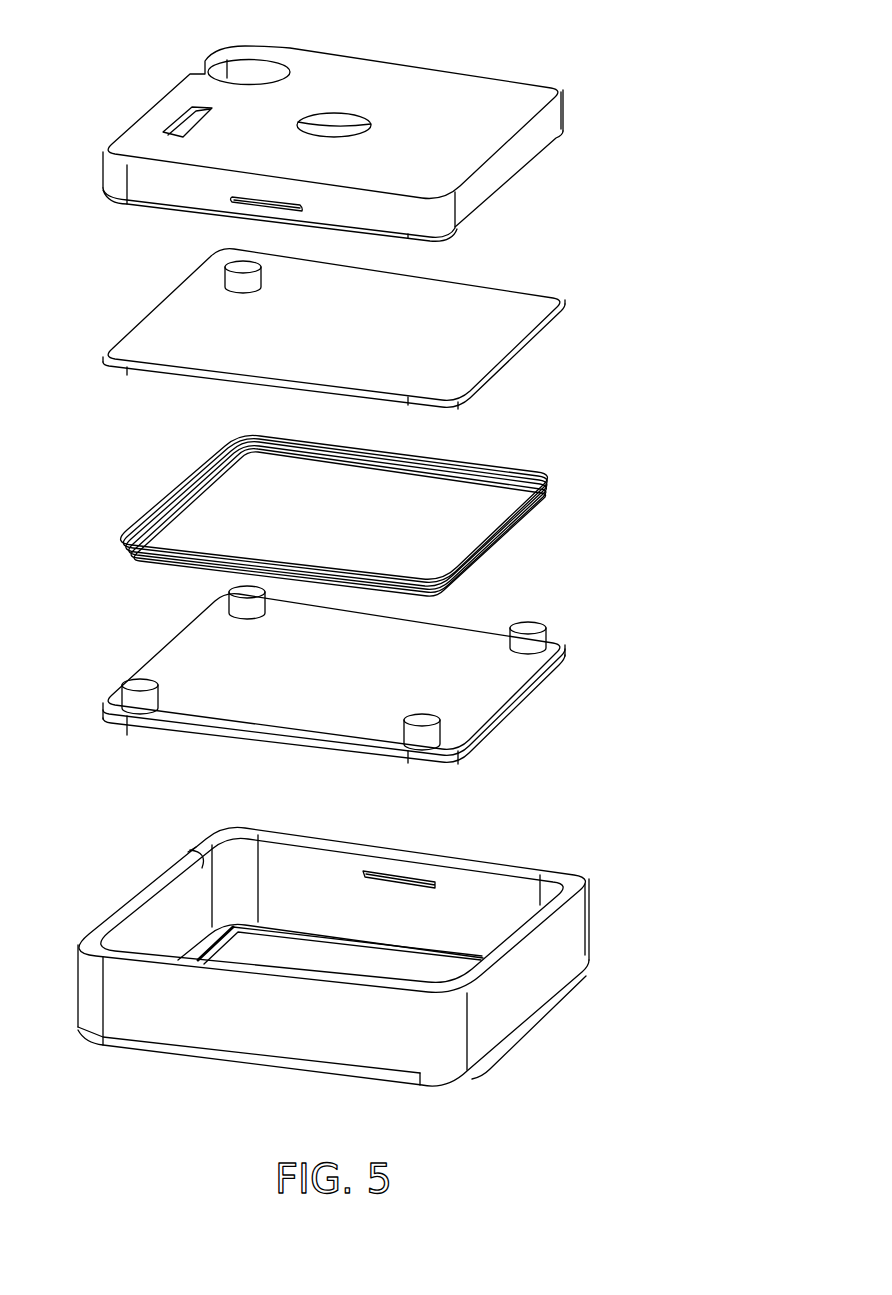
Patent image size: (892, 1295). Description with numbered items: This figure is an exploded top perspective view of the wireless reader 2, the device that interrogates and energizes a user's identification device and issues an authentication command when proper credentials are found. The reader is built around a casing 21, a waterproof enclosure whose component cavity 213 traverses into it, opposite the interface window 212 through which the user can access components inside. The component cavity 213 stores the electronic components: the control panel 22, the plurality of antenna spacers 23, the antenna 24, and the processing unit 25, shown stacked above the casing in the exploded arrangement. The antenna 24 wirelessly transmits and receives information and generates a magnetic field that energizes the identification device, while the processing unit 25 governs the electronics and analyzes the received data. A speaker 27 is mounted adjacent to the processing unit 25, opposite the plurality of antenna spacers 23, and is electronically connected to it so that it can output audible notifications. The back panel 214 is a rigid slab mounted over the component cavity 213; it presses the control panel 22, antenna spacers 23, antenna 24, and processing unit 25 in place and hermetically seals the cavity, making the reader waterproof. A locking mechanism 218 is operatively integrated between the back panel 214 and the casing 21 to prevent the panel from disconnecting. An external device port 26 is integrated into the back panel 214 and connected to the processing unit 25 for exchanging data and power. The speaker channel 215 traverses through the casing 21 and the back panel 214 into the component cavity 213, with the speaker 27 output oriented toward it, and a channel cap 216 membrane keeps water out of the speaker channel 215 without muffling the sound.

The wireless reader 2 is at (643, 5).
The casing 21 is at (580, 876).
The control panel 22 is at (435, 768).
The plurality of antenna spacers 23 is at (145, 683).
The antenna 24 is at (115, 555).
The processing unit 25 is at (540, 293).
The external device port 26 is at (188, 125).
The speaker 27 is at (255, 282).
The interface window 212 is at (380, 968).
The component cavity 213 is at (318, 866).
The back panel 214 is at (513, 84).
The speaker channel 215 is at (249, 79).
The channel cap 216 is at (189, 853).
The locking mechanism 218 is at (298, 207).